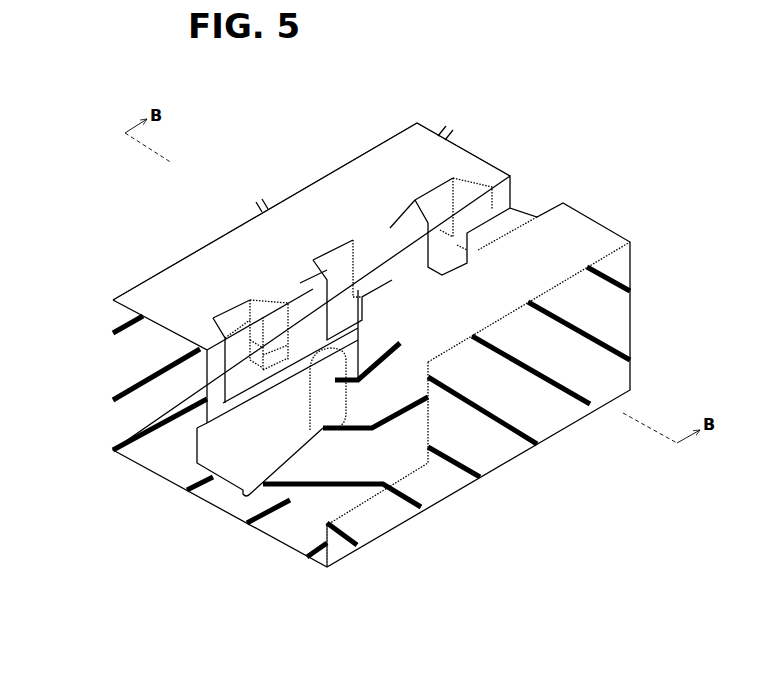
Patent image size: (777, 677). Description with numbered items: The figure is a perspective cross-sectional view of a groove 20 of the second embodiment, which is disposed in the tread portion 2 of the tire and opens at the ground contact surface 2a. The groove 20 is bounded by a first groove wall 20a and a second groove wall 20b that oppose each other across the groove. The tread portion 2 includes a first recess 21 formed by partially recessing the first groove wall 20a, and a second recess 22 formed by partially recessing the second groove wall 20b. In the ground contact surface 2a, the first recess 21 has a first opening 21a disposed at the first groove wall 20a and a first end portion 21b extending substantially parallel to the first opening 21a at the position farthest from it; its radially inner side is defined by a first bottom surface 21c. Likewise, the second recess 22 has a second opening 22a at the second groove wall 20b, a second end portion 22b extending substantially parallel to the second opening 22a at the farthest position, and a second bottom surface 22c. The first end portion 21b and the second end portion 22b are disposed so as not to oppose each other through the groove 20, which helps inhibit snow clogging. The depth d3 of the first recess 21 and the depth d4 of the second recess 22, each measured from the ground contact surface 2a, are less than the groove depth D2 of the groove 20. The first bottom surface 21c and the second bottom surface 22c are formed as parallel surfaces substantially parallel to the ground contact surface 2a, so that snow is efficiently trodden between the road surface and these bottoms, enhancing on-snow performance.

The tread portion 2 is at (413, 304).
The ground contact surface 2a is at (388, 174).
The groove 20 is at (413, 336).
The first groove wall 20a is at (362, 328).
The second groove wall 20b is at (340, 265).
The first recess 21 is at (185, 278).
The first opening 21a is at (228, 303).
The first end portion 21b is at (260, 327).
The first bottom surface 21c is at (243, 372).
The second recess 22 is at (519, 361).
The second opening 22a is at (440, 245).
The second end portion 22b is at (457, 258).
The second bottom surface 22c is at (320, 432).
The depth of the first recess d3 is at (272, 308).
The depth of the second recess d4 is at (428, 365).
The groove depth D2 is at (243, 488).